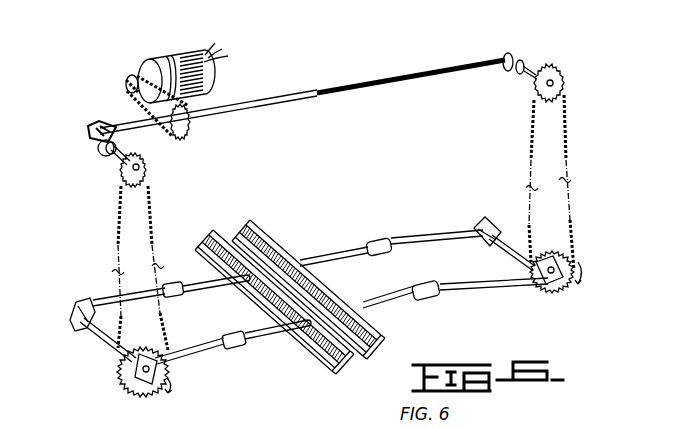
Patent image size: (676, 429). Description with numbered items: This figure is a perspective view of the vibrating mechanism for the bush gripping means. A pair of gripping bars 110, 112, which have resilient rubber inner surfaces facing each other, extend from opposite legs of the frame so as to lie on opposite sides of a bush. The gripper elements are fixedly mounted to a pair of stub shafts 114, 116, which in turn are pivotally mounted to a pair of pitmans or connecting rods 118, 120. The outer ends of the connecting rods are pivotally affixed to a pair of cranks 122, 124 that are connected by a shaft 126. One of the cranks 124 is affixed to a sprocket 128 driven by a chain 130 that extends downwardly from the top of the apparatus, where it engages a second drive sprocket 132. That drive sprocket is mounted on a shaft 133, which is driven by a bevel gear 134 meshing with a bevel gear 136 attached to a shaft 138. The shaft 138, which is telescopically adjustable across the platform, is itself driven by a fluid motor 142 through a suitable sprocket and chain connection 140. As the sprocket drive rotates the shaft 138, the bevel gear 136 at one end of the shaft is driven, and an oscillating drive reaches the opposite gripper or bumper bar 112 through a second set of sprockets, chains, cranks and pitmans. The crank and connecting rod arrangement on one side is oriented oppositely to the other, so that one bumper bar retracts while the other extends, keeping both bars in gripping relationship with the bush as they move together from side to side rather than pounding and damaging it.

The gripping bar 110 is at (216, 227).
The gripping bar 112 is at (250, 222).
The stub shaft 114 is at (197, 290).
The stub shaft 116 is at (273, 333).
The connecting rod 118 is at (135, 302).
The connecting rod 120 is at (197, 353).
The crank 122 is at (90, 304).
The crank 124 is at (149, 386).
The shaft 126 is at (108, 340).
The sprocket 128 is at (130, 383).
The chain 130 is at (152, 200).
The drive sprocket 132 is at (120, 186).
The shaft 133 is at (108, 162).
The bevel gear 134 is at (97, 147).
The bevel gear 136 is at (104, 125).
The shaft 138 is at (126, 119).
The sprocket and chain connection 140 is at (196, 106).
The fluid motor 142 is at (156, 58).